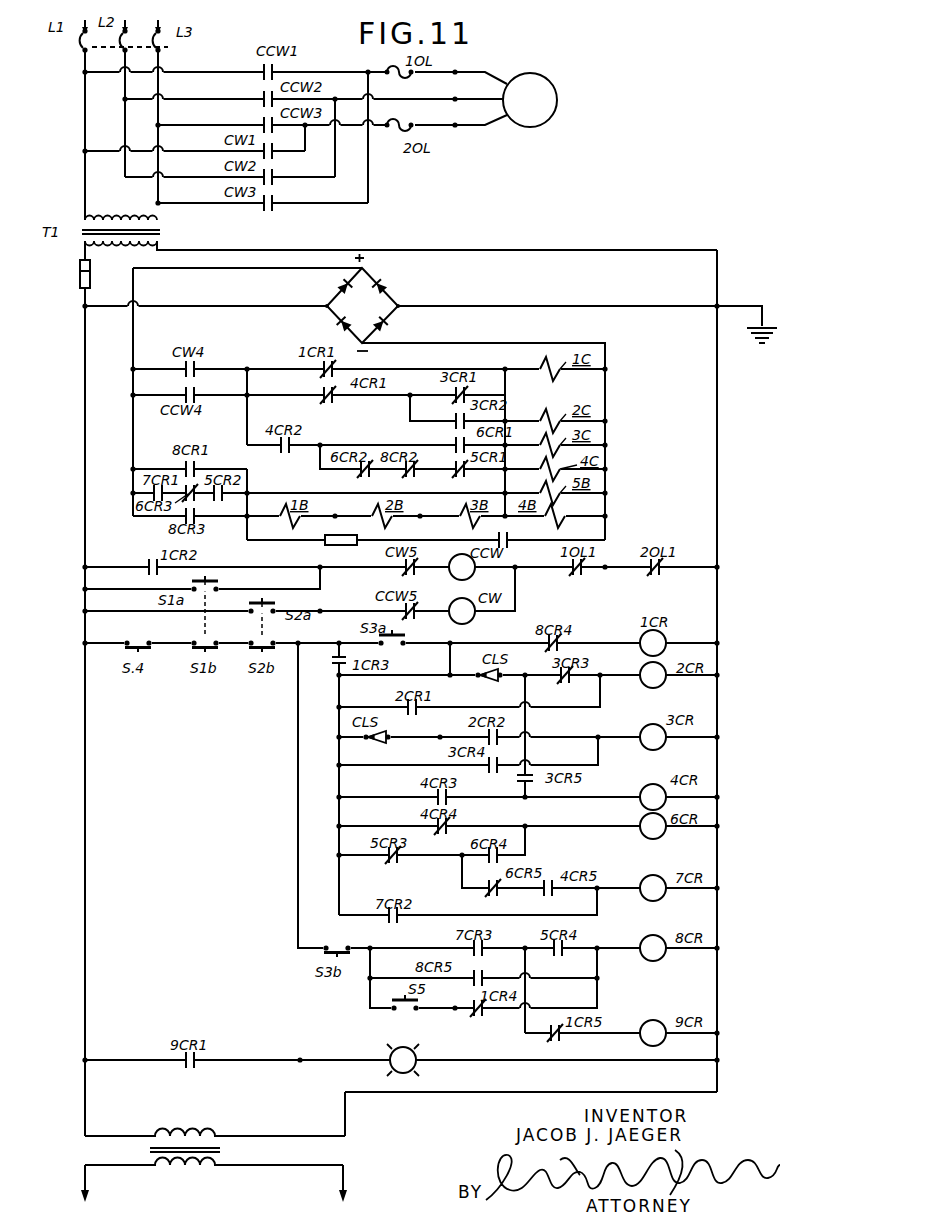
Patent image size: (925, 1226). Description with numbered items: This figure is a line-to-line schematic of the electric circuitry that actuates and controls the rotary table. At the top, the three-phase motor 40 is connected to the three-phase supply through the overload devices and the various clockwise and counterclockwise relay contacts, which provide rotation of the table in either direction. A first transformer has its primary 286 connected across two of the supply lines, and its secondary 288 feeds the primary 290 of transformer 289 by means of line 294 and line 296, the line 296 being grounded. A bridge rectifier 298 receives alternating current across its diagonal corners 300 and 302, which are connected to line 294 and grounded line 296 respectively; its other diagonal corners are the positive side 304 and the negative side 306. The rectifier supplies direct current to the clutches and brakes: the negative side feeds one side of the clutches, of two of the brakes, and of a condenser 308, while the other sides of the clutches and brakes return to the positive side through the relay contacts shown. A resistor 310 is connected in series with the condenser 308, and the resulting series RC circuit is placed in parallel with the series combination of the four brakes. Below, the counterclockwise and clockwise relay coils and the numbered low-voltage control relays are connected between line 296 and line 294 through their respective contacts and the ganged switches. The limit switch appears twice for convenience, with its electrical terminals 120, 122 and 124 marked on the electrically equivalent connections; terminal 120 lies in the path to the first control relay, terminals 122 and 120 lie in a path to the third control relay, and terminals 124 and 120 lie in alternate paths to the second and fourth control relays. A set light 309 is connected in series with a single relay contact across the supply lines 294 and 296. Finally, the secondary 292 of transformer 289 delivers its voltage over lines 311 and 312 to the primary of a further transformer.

The motor 40 is at (548, 105).
The terminal of CLS 120 is at (330, 740).
The terminal of CLS 122 is at (372, 741).
The terminal of CLS 124 is at (491, 680).
The primary 286 is at (134, 207).
The secondary 288 is at (96, 247).
The transformer 289 is at (91, 688).
The primary 290 is at (197, 1134).
The secondary 292 is at (178, 1170).
The line 294 is at (85, 345).
The line 296 is at (718, 632).
The bridge rectifier 298 is at (362, 305).
The corner 300 is at (323, 309).
The corner 302 is at (403, 302).
The corner (+ side) 304 is at (372, 267).
The corner (— side) 306 is at (368, 347).
The condenser 308 is at (508, 538).
The set light 309 is at (416, 1054).
The resistor 310 is at (337, 535).
The line 311 is at (80, 1180).
The line 312 is at (347, 1185).